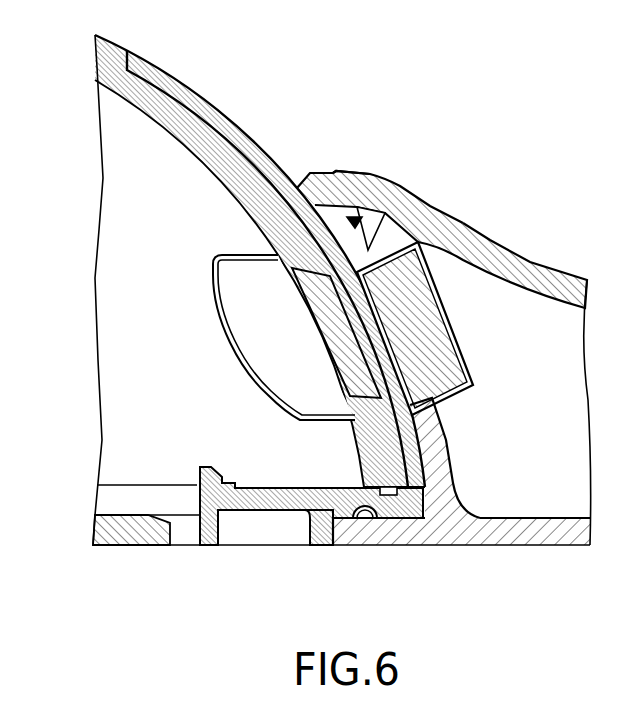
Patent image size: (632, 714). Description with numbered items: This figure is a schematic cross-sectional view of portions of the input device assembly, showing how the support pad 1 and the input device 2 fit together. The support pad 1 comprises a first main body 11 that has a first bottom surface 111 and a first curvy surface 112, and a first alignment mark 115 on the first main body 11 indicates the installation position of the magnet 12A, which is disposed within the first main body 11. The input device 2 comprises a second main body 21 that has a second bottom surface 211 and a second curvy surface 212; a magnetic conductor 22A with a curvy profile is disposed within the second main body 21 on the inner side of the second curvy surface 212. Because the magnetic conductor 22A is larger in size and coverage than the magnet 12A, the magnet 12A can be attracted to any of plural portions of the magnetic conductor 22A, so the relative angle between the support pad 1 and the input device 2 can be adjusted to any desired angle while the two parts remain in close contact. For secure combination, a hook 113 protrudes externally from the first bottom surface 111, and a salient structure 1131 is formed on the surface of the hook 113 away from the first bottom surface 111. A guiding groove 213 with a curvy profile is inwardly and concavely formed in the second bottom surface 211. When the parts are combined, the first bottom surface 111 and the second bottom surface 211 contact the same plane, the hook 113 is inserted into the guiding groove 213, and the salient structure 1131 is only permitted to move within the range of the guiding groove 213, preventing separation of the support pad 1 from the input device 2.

The support pad 1 is at (427, 207).
The first main body 11 is at (537, 280).
The first bottom surface 111 is at (514, 545).
The first curvy surface 112 is at (438, 447).
The hook 113 is at (370, 532).
The salient structure 1131 is at (383, 518).
The first alignment mark 115 is at (353, 173).
The magnet 12A is at (402, 288).
The input device 2 is at (207, 98).
The second main body 21 is at (197, 142).
The second bottom surface 211 is at (323, 547).
The second curvy surface 212 is at (400, 422).
The guiding groove 213 is at (363, 502).
The magnetic conductor 22A is at (350, 355).